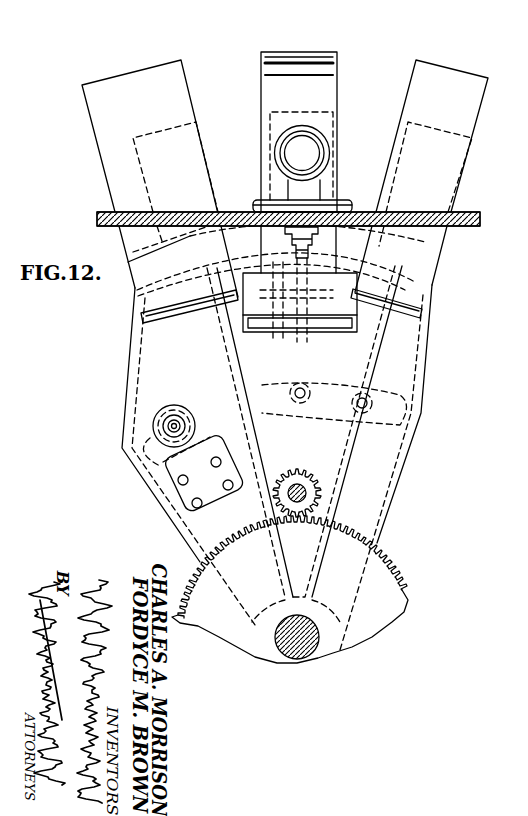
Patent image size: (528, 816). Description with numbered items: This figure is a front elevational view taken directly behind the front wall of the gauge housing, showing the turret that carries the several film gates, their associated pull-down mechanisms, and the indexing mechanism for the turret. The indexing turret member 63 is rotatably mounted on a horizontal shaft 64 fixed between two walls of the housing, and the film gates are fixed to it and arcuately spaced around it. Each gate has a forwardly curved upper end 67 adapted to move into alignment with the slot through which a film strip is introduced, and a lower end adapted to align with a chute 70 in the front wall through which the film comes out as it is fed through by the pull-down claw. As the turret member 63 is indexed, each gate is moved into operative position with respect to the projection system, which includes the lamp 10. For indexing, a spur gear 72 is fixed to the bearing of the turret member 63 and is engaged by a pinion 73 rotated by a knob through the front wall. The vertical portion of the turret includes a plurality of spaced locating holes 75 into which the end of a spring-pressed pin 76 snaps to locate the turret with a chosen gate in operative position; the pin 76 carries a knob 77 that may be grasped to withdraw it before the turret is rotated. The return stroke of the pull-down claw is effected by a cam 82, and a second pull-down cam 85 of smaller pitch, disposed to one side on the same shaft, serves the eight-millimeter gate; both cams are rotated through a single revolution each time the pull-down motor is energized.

The lamp 10 is at (305, 148).
The indexing turret member 63 is at (400, 477).
The horizontal shaft 64 is at (297, 652).
The upper end of the gate 67 is at (326, 99).
The chute 70 is at (346, 326).
The spur gear 72 is at (400, 565).
The pinion 73 is at (305, 470).
The locating holes 75 is at (358, 406).
The spring-pressed pin 76 is at (174, 418).
The knob 77 is at (163, 407).
The cam 82 is at (302, 342).
The second pull-down cam 85 is at (280, 340).